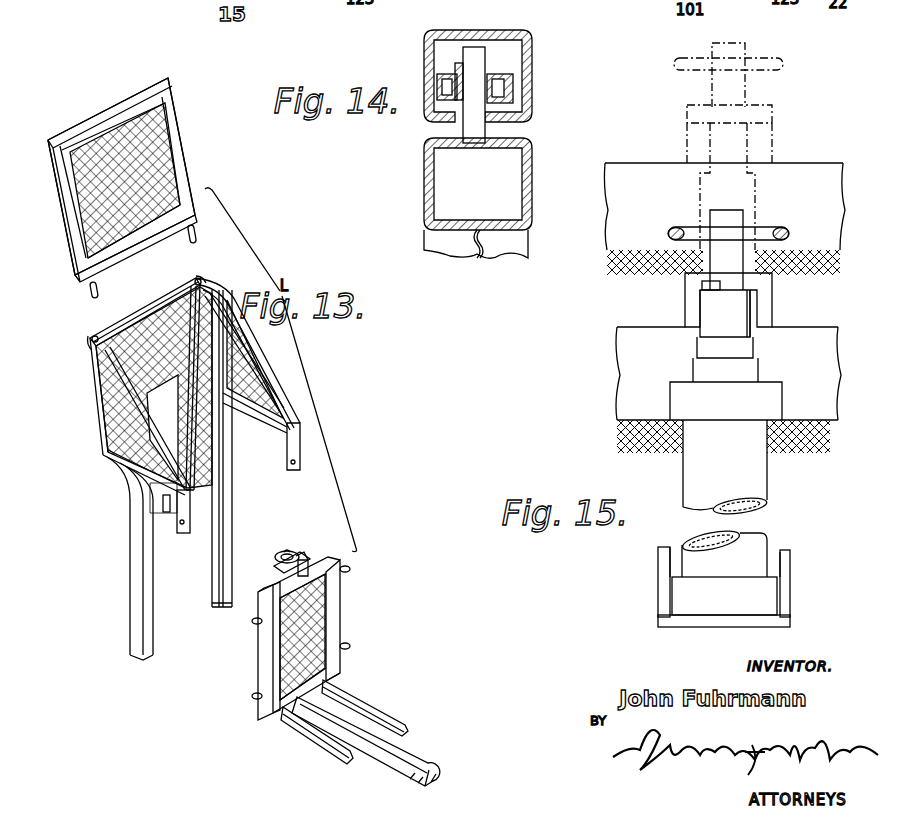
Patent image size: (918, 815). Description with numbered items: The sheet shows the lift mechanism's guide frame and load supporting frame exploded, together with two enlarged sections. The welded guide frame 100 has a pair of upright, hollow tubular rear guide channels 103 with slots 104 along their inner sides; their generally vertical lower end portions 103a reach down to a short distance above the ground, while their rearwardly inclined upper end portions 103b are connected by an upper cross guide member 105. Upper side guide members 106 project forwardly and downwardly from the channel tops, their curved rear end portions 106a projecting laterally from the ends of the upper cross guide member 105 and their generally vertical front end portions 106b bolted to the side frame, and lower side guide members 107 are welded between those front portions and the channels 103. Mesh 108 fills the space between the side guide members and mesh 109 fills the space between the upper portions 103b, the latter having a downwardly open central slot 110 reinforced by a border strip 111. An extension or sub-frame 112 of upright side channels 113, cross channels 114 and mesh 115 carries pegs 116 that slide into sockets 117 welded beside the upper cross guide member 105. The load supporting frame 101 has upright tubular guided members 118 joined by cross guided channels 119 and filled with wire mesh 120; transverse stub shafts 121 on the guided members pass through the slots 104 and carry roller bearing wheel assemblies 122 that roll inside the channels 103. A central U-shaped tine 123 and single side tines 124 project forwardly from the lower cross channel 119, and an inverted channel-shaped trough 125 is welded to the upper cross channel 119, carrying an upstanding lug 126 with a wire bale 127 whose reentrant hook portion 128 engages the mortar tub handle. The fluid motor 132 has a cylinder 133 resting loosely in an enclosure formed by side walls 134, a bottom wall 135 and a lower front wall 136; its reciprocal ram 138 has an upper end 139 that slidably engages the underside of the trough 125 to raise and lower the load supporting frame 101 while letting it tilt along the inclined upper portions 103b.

In FIG. 13, the guide frame 100 is at (202, 456).
In FIG. 13, the load supporting frame 101 is at (323, 645).
In FIG. 13, the rear guide member channel 103 is at (169, 471).
In FIG. 14, the rear guide member channel 103 is at (533, 57).
In FIG. 13, the lower end portion of channel 103a is at (128, 592).
In FIG. 13, the upper end portion of channel 103b is at (105, 494).
In FIG. 13, the slot 104 is at (215, 572).
In FIG. 14, the slot 104 is at (463, 128).
In FIG. 13, the upper cross guide member 105 is at (149, 303).
In FIG. 13, the upper side guide member 106 is at (255, 367).
In FIG. 13, the rear end portion of upper side guide member 106a is at (200, 283).
In FIG. 13, the front end portion of upper side guide member 106b is at (190, 530).
In FIG. 13, the lower side guide member 107 is at (250, 418).
In FIG. 13, the mesh or screening 108 is at (240, 346).
In FIG. 13, the mesh or screening 109 is at (167, 317).
In FIG. 13, the central slot 110 is at (180, 425).
In FIG. 13, the border strip 111 is at (130, 502).
In FIG. 13, the extension or sub-frame 112 is at (127, 185).
In FIG. 13, the upright side channel 113 is at (185, 165).
In FIG. 13, the cross channel 114 is at (133, 95).
In FIG. 13, the mesh or screening 115 is at (150, 128).
In FIG. 13, the peg 116 is at (196, 232).
In FIG. 13, the socket 117 is at (203, 282).
In FIG. 13, the upright longitudinal guided member 118 is at (337, 627).
In FIG. 14, the upright longitudinal guided member 118 is at (428, 183).
In FIG. 13, the cross guided channel 119 is at (320, 558).
In FIG. 14, the cross guided channel 119 is at (427, 236).
In FIG. 15, the cross guided channel 119 is at (824, 165).
In FIG. 13, the wire mesh or screening 120 is at (258, 630).
In FIG. 14, the wire mesh or screening 120 is at (478, 252).
In FIG. 15, the wire mesh or screening 120 is at (625, 440).
In FIG. 13, the stub shaft 121 is at (347, 570).
In FIG. 14, the stub shaft 121 is at (473, 127).
In FIG. 14, the roller bearing wheel assembly 122 is at (450, 73).
In FIG. 13, the load supporting fork member 123 is at (417, 742).
In FIG. 13, the load supporting fork member 124 is at (373, 712).
In FIG. 13, the cantilever ledge or trough 125 is at (273, 572).
In FIG. 15, the cantilever ledge or trough 125 is at (772, 132).
In FIG. 13, the upstanding lug 126 is at (298, 557).
In FIG. 15, the upstanding lug 126 is at (740, 45).
In FIG. 13, the wire bale 127 is at (297, 543).
In FIG. 15, the wire bale 127 is at (792, 63).
In FIG. 13, the reentrant hook portion 128 is at (295, 547).
In FIG. 15, the fluid motor 132 is at (769, 468).
In FIG. 15, the cylinder 133 is at (768, 462).
In FIG. 15, the side wall 134 is at (658, 557).
In FIG. 15, the bottom wall 135 is at (660, 620).
In FIG. 15, the lower front wall 136 is at (772, 558).
In FIG. 15, the reciprocal piston or ram 138 is at (740, 317).
In FIG. 15, the upper end of ram 139 is at (712, 290).